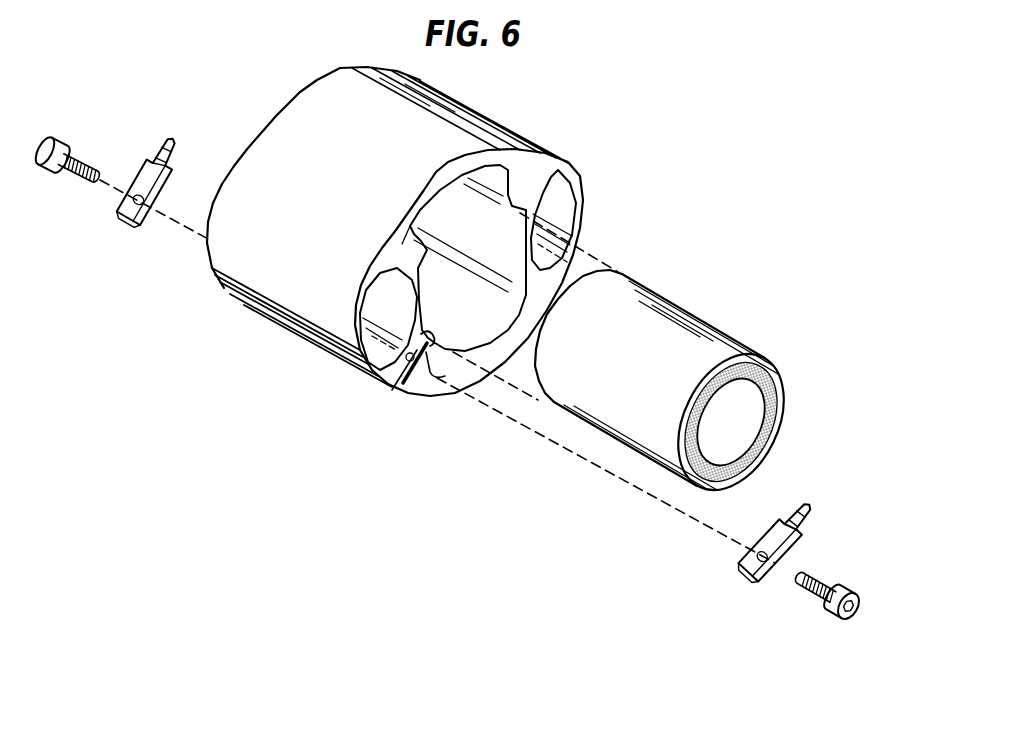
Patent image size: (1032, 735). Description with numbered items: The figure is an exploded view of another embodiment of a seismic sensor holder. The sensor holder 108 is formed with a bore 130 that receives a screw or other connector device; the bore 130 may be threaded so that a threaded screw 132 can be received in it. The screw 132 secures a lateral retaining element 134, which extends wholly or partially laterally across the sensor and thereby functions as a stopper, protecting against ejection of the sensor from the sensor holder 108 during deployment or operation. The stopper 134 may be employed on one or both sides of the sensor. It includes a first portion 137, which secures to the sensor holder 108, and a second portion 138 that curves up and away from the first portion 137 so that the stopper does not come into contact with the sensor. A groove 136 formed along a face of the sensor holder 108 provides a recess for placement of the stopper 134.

The sensor holder 108 is at (293, 298).
The bore 130 is at (420, 353).
The screw 132 is at (820, 598).
The lateral retaining element 134 is at (790, 539).
The groove 136 is at (432, 341).
The first portion 137 is at (737, 556).
The second portion 138 is at (786, 501).